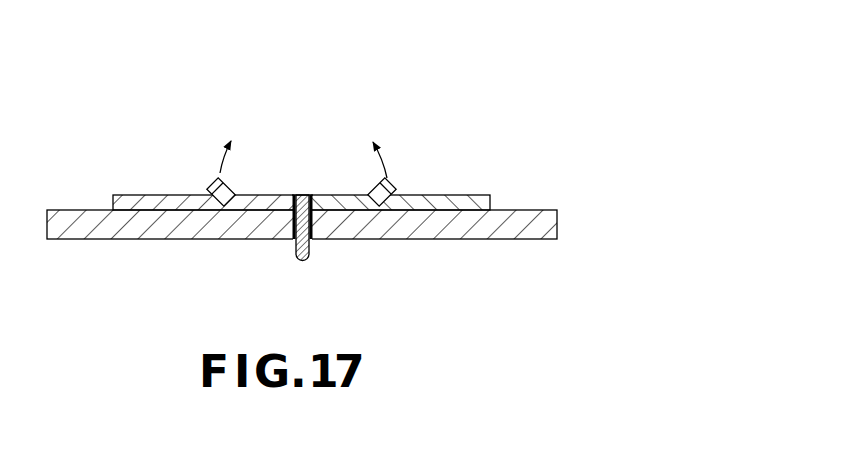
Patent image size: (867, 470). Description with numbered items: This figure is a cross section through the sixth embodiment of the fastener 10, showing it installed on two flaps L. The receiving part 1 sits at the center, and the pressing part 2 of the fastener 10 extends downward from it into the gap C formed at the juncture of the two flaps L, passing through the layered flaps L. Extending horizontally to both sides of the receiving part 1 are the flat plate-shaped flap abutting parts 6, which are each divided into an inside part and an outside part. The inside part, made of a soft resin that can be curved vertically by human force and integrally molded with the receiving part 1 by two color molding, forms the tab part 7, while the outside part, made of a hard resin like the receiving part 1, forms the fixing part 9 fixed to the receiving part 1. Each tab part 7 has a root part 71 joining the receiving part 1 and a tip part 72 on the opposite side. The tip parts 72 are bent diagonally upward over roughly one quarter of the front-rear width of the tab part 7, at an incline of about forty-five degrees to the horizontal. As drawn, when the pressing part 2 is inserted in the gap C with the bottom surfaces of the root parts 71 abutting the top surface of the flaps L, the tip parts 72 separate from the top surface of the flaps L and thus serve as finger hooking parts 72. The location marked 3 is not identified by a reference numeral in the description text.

The receiving part 1 is at (302, 195).
The pressing part 2 is at (310, 258).
The through hole 3 is at (291, 234).
The flap abutting part 6 is at (123, 103).
The tab part 7 is at (243, 195).
The fixing part 9 is at (123, 195).
The fastener 10 is at (108, 173).
The root part 71 is at (289, 205).
The tip part (finger hooking part) 72 is at (208, 183).
The flap L is at (84, 226).
The gap C is at (293, 247).